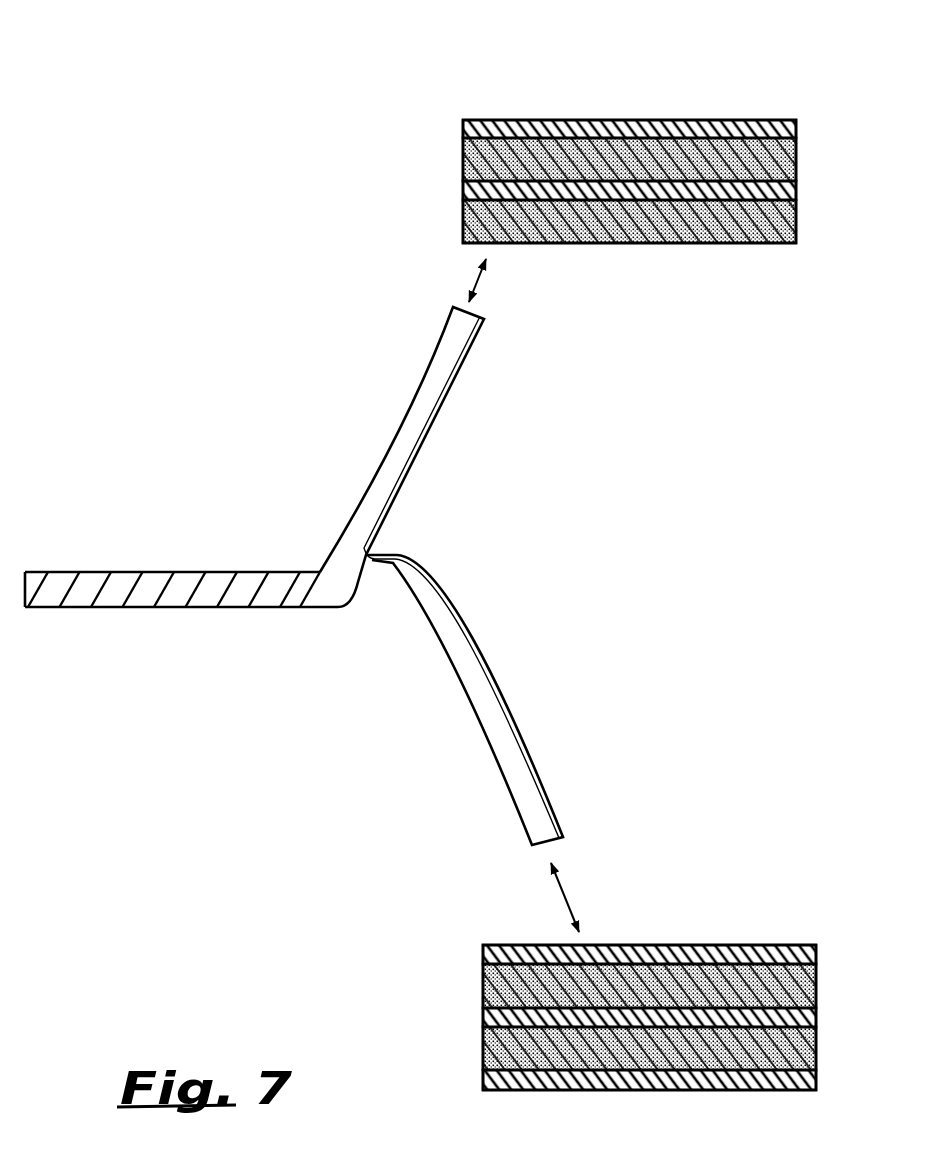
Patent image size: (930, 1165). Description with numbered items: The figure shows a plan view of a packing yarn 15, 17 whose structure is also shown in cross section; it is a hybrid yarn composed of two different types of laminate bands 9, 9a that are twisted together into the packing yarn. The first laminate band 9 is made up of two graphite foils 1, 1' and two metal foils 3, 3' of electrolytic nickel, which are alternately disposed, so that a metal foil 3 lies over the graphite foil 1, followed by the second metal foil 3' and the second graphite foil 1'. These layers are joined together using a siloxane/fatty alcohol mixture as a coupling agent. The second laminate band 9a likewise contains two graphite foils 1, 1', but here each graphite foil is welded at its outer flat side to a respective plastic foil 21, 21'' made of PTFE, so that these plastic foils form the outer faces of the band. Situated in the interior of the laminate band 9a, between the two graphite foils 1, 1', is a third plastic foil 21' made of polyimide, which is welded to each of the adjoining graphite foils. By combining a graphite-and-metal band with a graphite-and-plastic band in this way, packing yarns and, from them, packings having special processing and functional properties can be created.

The laminate band 9 is at (638, 108).
The laminate band 9a is at (648, 933).
The graphite foil 1 is at (669, 570).
The graphite foil 1' is at (674, 634).
The metal foil 3 is at (658, 121).
The metal foil 3' is at (663, 185).
The plastic foil 21 is at (682, 948).
The plastic foil 21' is at (684, 1011).
The plastic foil 21'' is at (686, 1076).
The packing yarn 15 is at (181, 524).
The packing yarn 17 is at (160, 552).